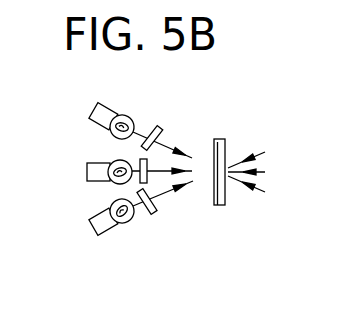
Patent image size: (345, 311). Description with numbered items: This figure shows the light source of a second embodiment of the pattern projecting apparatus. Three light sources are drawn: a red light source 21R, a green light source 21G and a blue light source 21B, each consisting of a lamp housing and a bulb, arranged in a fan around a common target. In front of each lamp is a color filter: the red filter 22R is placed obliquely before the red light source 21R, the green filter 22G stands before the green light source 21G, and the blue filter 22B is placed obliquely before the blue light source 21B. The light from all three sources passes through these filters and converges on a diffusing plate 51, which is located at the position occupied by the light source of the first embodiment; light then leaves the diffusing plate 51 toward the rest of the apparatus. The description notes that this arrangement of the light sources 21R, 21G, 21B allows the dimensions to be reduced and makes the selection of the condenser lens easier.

The light source 21R is at (89, 119).
The light source 21G is at (87, 172).
The light source 21B is at (90, 224).
The red filter 22R is at (153, 128).
The green filter 22G is at (147, 159).
The blue filter 22B is at (151, 217).
The diffusing plate 51 is at (220, 139).